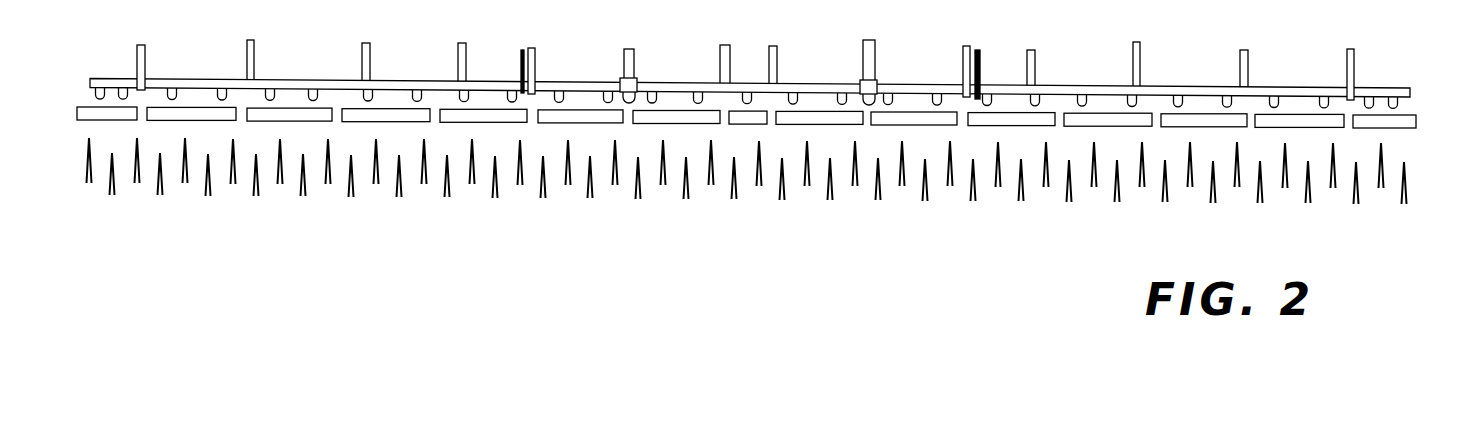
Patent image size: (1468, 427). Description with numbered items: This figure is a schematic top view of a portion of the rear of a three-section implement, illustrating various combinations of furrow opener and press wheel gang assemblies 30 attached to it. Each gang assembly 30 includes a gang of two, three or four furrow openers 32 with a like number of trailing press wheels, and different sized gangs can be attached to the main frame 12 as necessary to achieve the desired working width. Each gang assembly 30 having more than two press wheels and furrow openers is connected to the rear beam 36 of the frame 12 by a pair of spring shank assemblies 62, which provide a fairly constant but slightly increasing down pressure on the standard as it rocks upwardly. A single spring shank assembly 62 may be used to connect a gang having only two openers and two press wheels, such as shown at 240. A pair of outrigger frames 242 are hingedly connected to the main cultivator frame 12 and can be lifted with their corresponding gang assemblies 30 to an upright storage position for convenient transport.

The frame 12 is at (634, 49).
The furrow opener and press wheel gang assembly 30 is at (89, 195).
The furrow opener assembly 32 is at (82, 175).
The rear beam 36 is at (656, 81).
The spring shank assembly 62 is at (111, 91).
The gang having only two openers and two press wheels 240 is at (728, 190).
The outrigger frame 242 is at (750, 70).